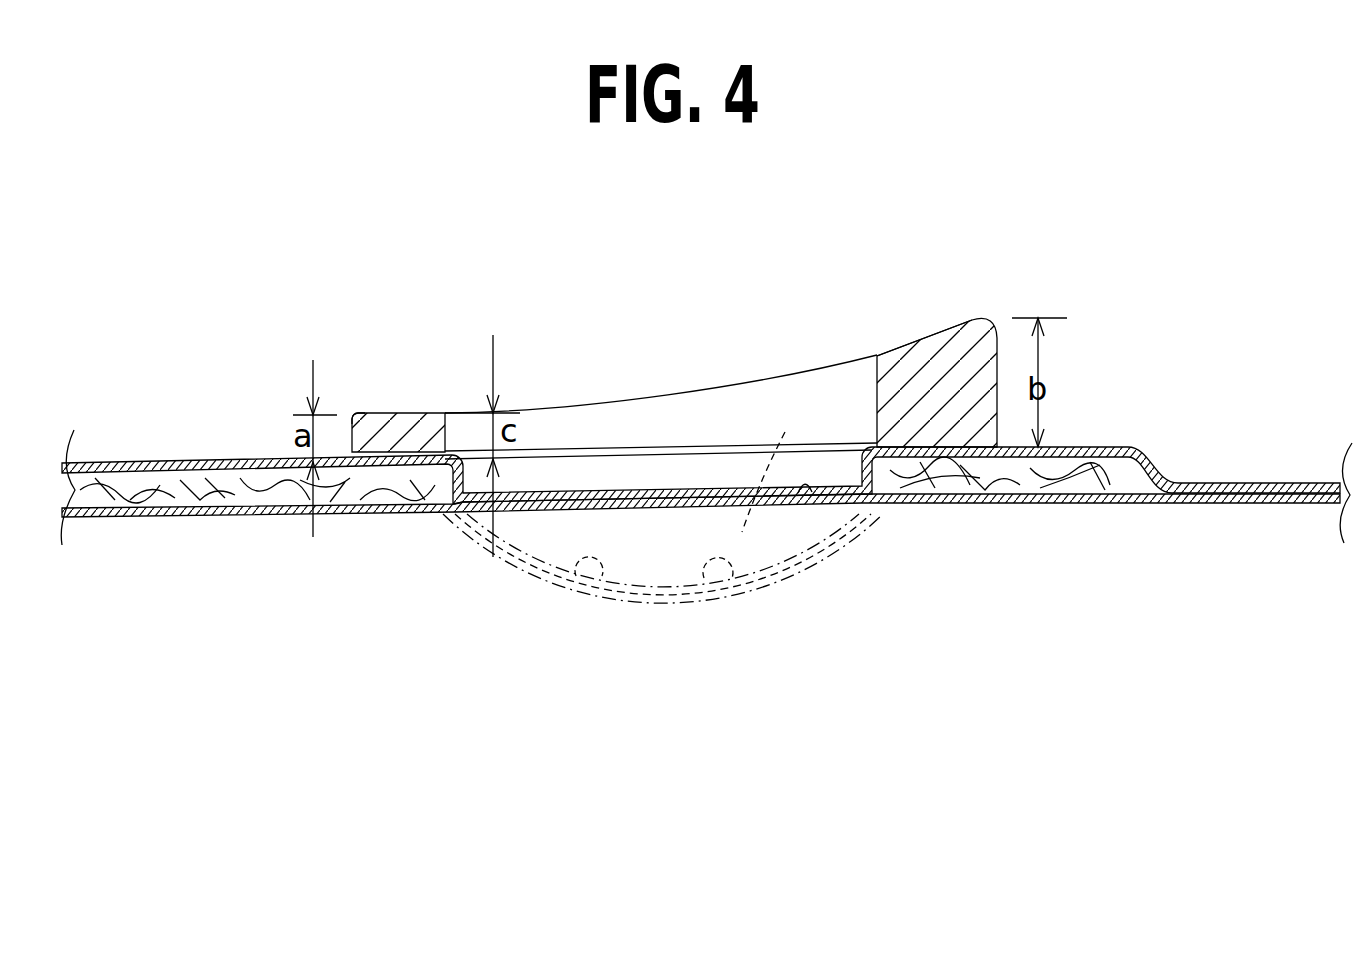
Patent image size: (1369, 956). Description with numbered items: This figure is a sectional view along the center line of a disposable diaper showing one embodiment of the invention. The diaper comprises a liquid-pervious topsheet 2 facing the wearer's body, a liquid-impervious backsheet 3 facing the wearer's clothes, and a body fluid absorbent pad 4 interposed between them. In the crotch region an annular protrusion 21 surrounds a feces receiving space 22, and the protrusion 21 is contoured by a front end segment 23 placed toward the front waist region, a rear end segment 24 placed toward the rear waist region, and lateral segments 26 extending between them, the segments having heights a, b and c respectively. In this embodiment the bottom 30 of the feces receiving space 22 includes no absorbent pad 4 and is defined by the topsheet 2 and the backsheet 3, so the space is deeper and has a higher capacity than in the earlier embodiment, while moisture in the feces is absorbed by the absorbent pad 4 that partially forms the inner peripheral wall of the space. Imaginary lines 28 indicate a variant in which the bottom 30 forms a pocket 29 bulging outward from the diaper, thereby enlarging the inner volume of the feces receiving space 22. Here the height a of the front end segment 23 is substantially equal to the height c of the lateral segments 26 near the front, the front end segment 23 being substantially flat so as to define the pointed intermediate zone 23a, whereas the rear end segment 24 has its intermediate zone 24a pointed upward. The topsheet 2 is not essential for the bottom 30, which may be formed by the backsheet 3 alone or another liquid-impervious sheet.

The topsheet 2 is at (675, 492).
The backsheet 3 is at (592, 510).
The absorbent pad 4 is at (938, 485).
The protrusion 21 is at (415, 408).
The feces receiving space 22 is at (792, 378).
The front end segment 23 is at (396, 424).
The pointed intermediate zone 23a is at (370, 413).
The rear end segment 24 is at (977, 333).
The intermediate zone 24a is at (950, 323).
The lateral segments 26 is at (585, 423).
The imaginary lines 28 is at (552, 580).
The pocket 29 is at (779, 464).
The bottom 30 is at (808, 494).